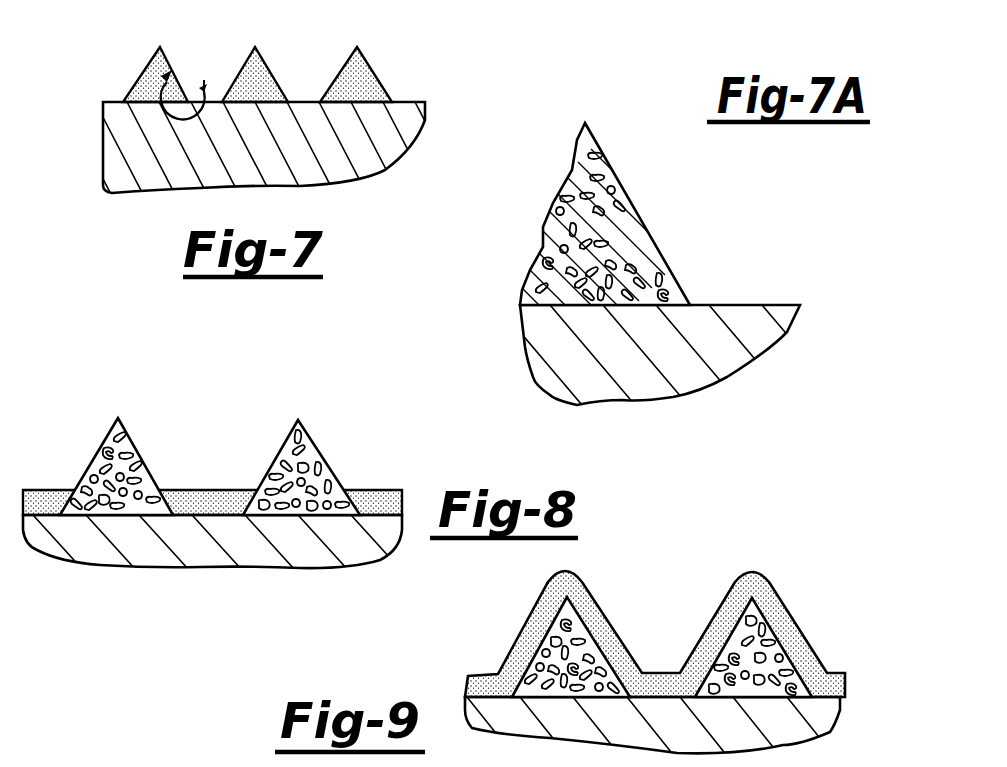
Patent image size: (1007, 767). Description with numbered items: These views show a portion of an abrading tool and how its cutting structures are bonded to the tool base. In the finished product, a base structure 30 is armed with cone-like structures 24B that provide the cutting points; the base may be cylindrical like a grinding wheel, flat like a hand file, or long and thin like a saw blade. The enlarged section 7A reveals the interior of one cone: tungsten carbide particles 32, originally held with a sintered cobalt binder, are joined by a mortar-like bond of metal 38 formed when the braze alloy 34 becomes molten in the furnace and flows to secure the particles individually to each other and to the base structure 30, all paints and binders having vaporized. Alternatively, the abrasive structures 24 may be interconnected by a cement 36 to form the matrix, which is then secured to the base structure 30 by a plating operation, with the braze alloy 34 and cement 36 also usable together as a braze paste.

In FIG. 8, the abrasive structure 24 is at (312, 440).
In FIG. 9, the abrasive structure 24 is at (762, 628).
In FIG. 7, the cone-like structure 24B is at (372, 70).
In FIG. 7, the base structure 30 is at (273, 159).
In FIG. 7A, the base structure 30 is at (652, 361).
In FIG. 8, the base structure 30 is at (228, 558).
In FIG. 9, the base structure 30 is at (666, 731).
In FIG. 7A, the tungsten carbide particles 32 is at (628, 217).
In FIG. 9, the braze alloy 34 is at (578, 598).
In FIG. 8, the cement 36 is at (198, 498).
In FIG. 7A, the mortar-like bond of metal 38 is at (600, 157).
In FIG. 7, the enlarged section 7A is at (198, 81).